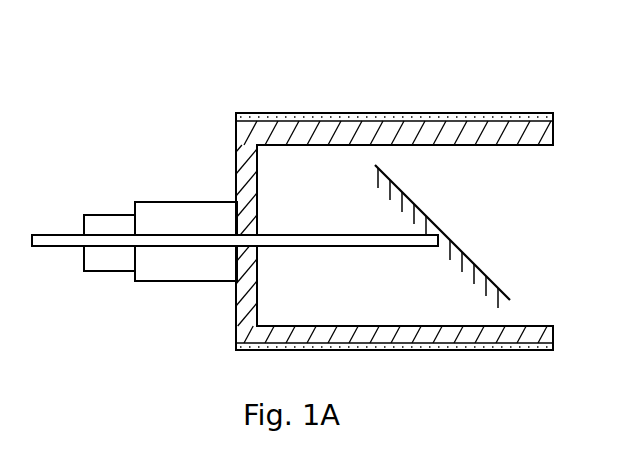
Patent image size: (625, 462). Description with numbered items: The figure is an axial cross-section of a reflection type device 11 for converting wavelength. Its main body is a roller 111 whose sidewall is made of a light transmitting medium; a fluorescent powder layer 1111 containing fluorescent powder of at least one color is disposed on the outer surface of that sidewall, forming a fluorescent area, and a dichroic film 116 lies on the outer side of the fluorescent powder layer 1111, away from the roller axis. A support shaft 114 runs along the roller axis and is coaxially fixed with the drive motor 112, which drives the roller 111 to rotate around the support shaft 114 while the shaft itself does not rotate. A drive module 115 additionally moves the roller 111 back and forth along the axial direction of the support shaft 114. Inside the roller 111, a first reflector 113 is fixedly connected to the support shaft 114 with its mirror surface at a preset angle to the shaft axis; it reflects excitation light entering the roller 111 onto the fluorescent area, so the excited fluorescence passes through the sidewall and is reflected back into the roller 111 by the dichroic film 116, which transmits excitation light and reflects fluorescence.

The device for converting wavelength 11 is at (87, 81).
The roller 111 is at (295, 128).
The fluorescent powder layer 1111 is at (372, 116).
The dichroic film 116 is at (487, 113).
The drive motor 112 is at (190, 201).
The drive module 115 is at (111, 214).
The support shaft 114 is at (282, 234).
The first reflector 113 is at (422, 210).